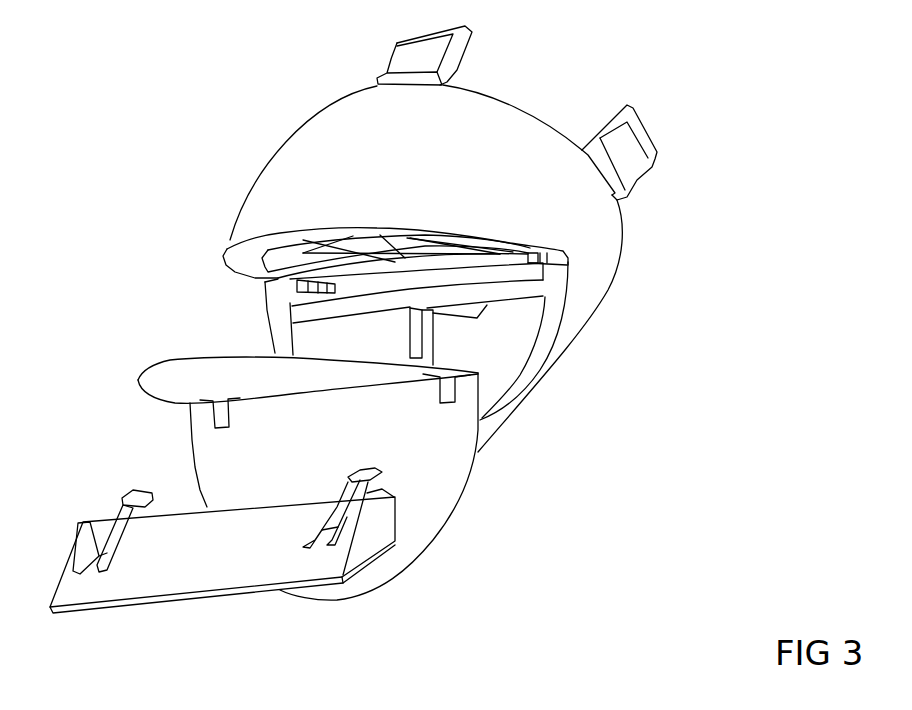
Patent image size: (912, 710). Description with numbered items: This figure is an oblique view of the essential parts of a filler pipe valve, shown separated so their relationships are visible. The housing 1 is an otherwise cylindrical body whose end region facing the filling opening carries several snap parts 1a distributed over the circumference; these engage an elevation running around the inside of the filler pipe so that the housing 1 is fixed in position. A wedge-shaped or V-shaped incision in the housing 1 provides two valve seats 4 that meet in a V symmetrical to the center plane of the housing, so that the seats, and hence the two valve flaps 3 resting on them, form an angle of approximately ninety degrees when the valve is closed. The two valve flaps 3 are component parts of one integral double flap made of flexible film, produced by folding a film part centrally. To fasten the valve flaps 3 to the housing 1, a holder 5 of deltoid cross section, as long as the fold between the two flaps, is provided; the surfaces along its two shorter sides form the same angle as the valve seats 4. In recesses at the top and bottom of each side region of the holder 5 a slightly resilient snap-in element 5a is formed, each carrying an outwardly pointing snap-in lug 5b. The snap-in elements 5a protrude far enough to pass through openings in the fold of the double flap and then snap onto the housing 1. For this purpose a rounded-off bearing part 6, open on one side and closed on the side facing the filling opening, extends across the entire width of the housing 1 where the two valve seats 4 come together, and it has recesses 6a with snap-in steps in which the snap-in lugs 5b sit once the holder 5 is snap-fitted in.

The housing 1 is at (588, 237).
The snap parts 1a is at (620, 133).
The valve flaps 3 is at (415, 463).
The valve seats 4 is at (550, 317).
The holder 5 is at (252, 540).
The snap-in elements 5a is at (113, 531).
The snap-in lugs 5b is at (362, 477).
The bearing part 6 is at (437, 245).
The recesses 6a is at (307, 245).